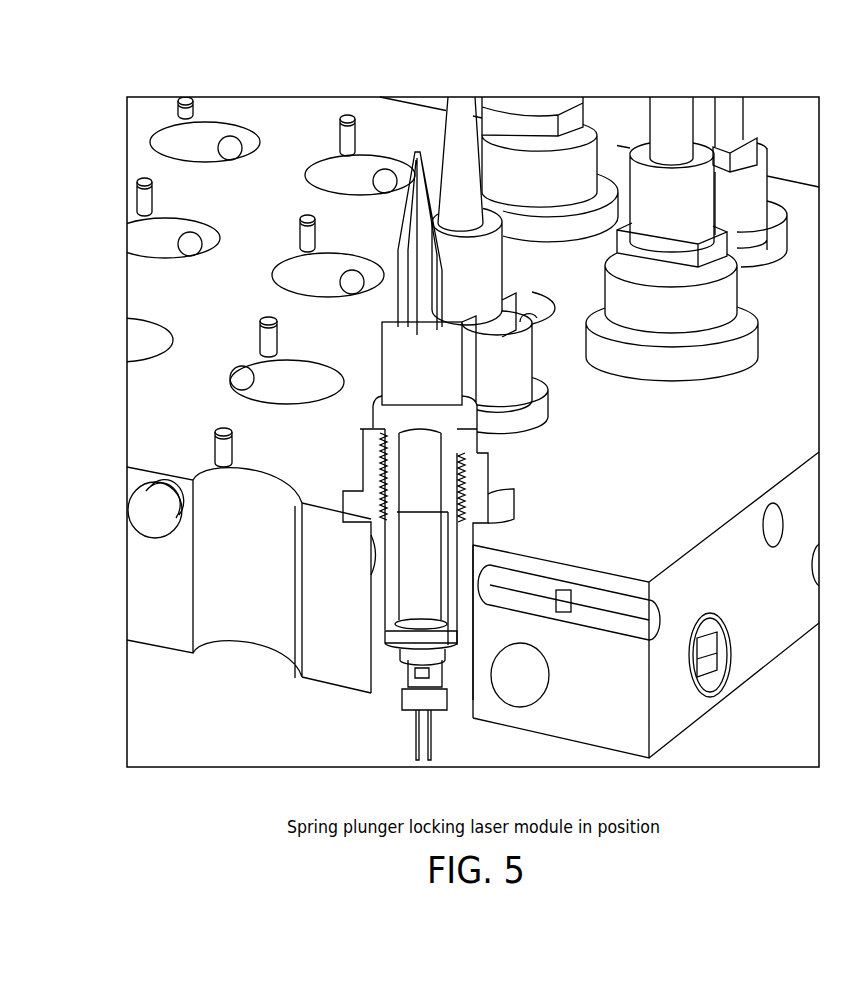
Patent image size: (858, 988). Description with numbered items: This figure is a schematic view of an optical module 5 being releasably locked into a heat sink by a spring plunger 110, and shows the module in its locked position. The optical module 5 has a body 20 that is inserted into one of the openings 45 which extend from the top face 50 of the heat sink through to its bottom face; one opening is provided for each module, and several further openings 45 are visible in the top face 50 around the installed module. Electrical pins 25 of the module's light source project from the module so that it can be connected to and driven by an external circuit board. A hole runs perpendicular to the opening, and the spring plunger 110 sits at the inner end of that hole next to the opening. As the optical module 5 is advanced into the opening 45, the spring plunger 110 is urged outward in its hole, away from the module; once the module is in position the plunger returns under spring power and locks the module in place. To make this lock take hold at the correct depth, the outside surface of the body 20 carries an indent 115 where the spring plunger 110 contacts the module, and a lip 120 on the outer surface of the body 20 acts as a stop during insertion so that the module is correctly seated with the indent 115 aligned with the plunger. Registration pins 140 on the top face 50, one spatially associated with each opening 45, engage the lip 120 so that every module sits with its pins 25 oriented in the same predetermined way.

The optical module 5 is at (512, 465).
The body 20 is at (360, 452).
The pins 25 is at (417, 733).
The openings 45 is at (370, 160).
The top face 50 is at (693, 460).
The spring plunger 110 is at (517, 588).
The indent 115 is at (488, 590).
The lip 120 is at (516, 506).
The registration pin 140 is at (305, 213).